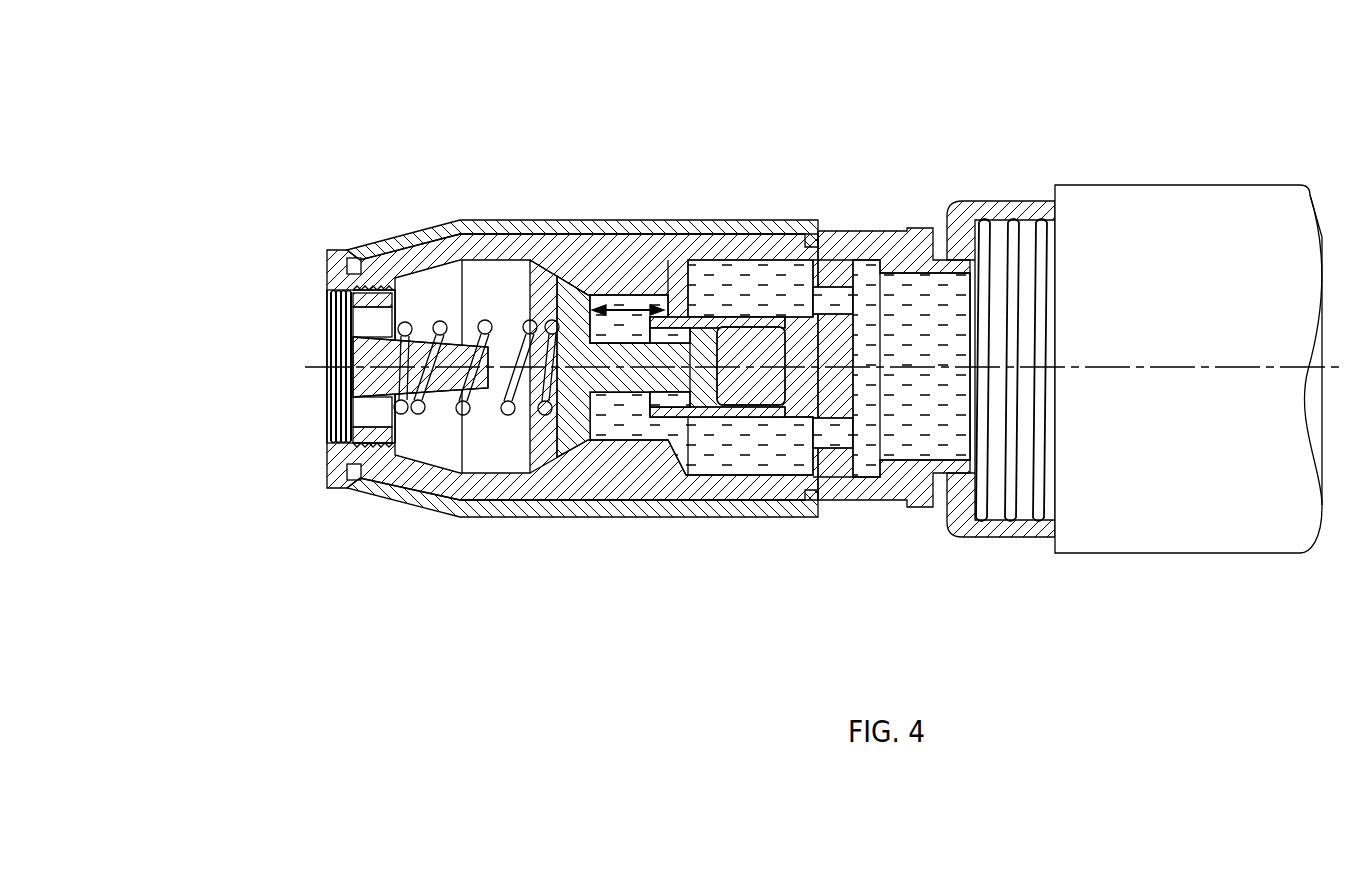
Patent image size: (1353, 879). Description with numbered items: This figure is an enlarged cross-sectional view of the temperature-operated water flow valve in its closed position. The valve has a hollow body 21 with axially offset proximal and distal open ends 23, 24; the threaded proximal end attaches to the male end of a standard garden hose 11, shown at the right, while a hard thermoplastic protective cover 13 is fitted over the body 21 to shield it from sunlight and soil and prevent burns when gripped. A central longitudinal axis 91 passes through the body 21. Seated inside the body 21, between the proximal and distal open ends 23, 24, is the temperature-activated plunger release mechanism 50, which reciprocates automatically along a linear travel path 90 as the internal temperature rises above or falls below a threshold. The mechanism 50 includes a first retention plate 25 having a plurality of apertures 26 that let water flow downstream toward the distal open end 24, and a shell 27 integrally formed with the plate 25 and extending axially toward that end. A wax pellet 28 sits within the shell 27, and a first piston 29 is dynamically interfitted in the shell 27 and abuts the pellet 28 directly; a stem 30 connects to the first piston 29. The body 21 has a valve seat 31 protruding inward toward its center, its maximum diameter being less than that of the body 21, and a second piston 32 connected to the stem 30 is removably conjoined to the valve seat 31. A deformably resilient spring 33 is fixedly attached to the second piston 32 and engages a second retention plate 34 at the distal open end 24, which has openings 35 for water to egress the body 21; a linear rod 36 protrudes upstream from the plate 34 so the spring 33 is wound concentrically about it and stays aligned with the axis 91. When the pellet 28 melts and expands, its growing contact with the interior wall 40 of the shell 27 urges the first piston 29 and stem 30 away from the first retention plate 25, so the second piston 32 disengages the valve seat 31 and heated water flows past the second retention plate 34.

The garden hose 11 is at (1253, 200).
The protective thermoplastic cover 13 is at (722, 218).
The hollow body 21 is at (568, 250).
The proximal open end 23 is at (878, 400).
The distal open end 24 is at (328, 420).
The first retention plate 25 is at (837, 458).
The apertures 26 is at (832, 273).
The shell 27 is at (770, 413).
The wax pellet 28 is at (776, 348).
The first piston 29 is at (708, 380).
The stem 30 is at (598, 378).
The valve seat 31 is at (673, 288).
The second piston 32 is at (568, 297).
The spring 33 is at (483, 420).
The second retention plate 34 is at (364, 337).
The openings 35 is at (383, 292).
The linear rod 36 is at (432, 423).
The interior wall 40 is at (800, 408).
The temperature-activated plunger release mechanism 50 is at (787, 100).
The linear travel path 90 is at (622, 307).
The central longitudinal axis 91 is at (305, 367).